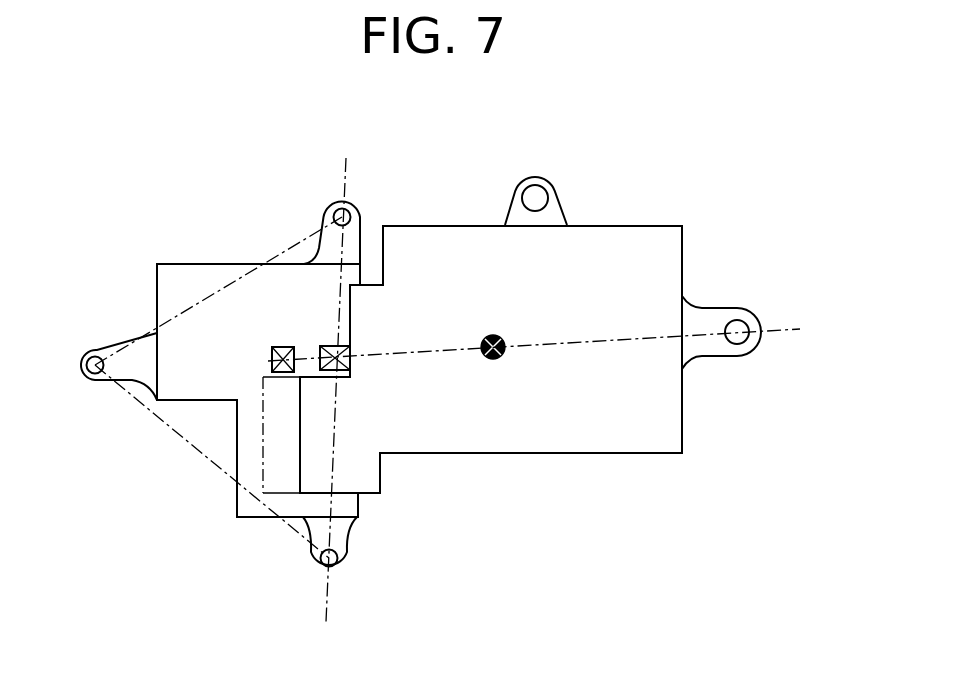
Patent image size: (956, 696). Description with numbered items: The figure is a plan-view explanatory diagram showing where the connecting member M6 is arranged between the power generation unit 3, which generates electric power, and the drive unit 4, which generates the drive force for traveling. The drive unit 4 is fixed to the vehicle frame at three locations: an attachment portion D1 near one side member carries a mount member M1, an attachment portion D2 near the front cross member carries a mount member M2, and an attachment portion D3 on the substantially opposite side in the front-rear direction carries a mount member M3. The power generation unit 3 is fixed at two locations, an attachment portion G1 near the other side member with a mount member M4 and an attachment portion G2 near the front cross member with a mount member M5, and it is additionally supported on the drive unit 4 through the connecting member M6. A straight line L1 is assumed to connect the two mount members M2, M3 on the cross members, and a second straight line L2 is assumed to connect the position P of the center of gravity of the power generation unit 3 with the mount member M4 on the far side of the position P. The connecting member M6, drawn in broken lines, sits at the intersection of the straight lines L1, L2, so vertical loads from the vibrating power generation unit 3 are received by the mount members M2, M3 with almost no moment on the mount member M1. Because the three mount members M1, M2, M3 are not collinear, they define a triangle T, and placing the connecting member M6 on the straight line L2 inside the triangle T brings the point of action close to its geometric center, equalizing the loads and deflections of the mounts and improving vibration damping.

The power generation unit 3 is at (633, 225).
The drive unit 4 is at (150, 299).
The attachment portion D1 is at (83, 353).
The attachment portion D2 is at (357, 202).
The attachment portion D3 is at (338, 573).
The mount member M1 is at (88, 378).
The mount member M2 is at (337, 213).
The mount member M3 is at (320, 572).
The mount member M4 is at (737, 322).
The mount member M5 is at (523, 187).
The connecting member M6 is at (295, 365).
The attachment portion G1 is at (731, 357).
The attachment portion G2 is at (555, 187).
The straight line L1 is at (344, 374).
The straight line L2 is at (551, 337).
The position of the center of gravity P is at (503, 352).
The triangle T is at (183, 438).